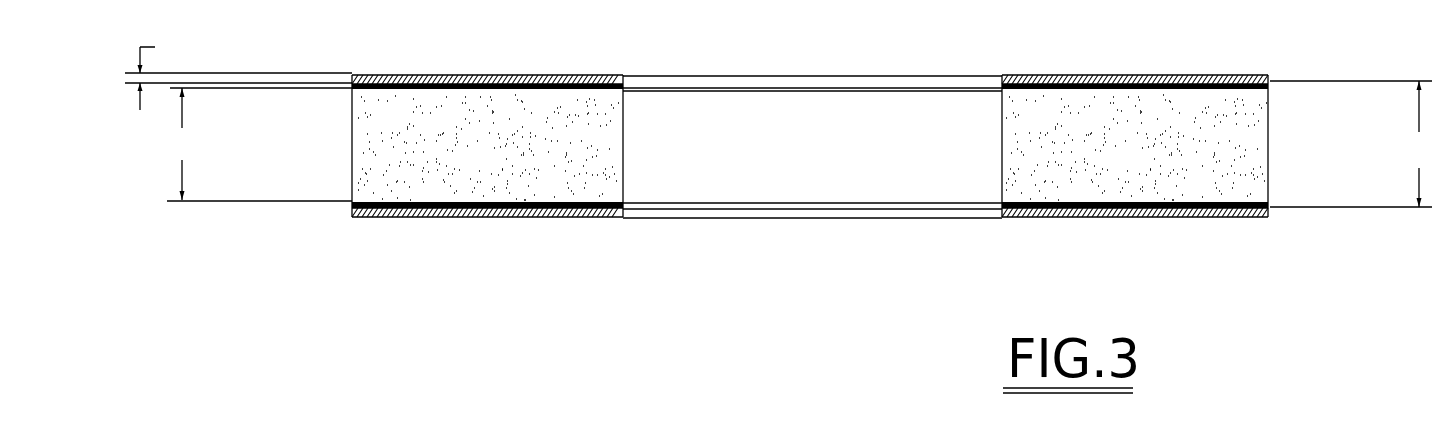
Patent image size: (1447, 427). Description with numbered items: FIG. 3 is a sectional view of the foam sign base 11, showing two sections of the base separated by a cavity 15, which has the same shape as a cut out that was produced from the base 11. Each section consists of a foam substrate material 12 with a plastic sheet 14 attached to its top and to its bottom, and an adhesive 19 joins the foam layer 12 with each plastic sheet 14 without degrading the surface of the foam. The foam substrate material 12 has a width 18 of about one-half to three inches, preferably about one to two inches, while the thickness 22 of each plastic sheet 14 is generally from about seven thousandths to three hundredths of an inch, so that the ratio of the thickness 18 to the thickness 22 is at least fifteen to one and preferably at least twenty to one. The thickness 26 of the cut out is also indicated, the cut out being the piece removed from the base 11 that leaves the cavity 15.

The base 11 is at (340, 172).
The foam substrate material 12 is at (505, 183).
The plastic sheet 14 is at (515, 77).
The cavity 15 is at (867, 193).
The width of foam substrate material 18 is at (185, 144).
The adhesive 19 is at (352, 93).
The thickness of plastic sheet 22 is at (169, 71).
The thickness of cut out 26 is at (1352, 144).